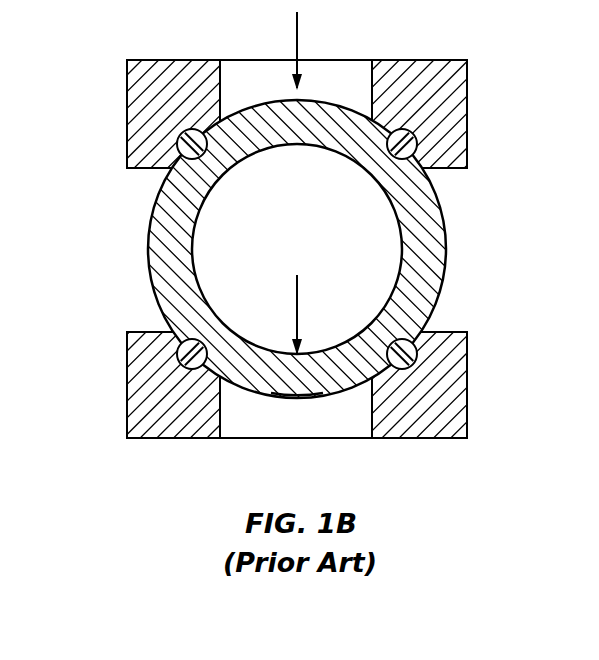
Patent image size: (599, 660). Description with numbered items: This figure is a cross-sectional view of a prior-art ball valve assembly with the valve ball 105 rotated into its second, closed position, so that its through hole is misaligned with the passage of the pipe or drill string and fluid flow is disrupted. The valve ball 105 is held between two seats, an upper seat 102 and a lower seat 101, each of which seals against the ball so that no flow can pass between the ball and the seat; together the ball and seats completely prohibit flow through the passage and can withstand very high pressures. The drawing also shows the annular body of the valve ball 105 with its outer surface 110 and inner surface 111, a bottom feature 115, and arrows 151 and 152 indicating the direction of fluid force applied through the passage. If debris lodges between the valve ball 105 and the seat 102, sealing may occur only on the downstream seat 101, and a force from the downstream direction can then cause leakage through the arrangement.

The seat 101 is at (467, 383).
The seat 102 is at (467, 117).
The valve ball 105 is at (299, 250).
The outer ring surface 110 is at (447, 248).
The ring 111 is at (148, 252).
The ring bottom seam 115 is at (296, 398).
The applied force 151 is at (296, 43).
The transmitted force 152 is at (296, 305).